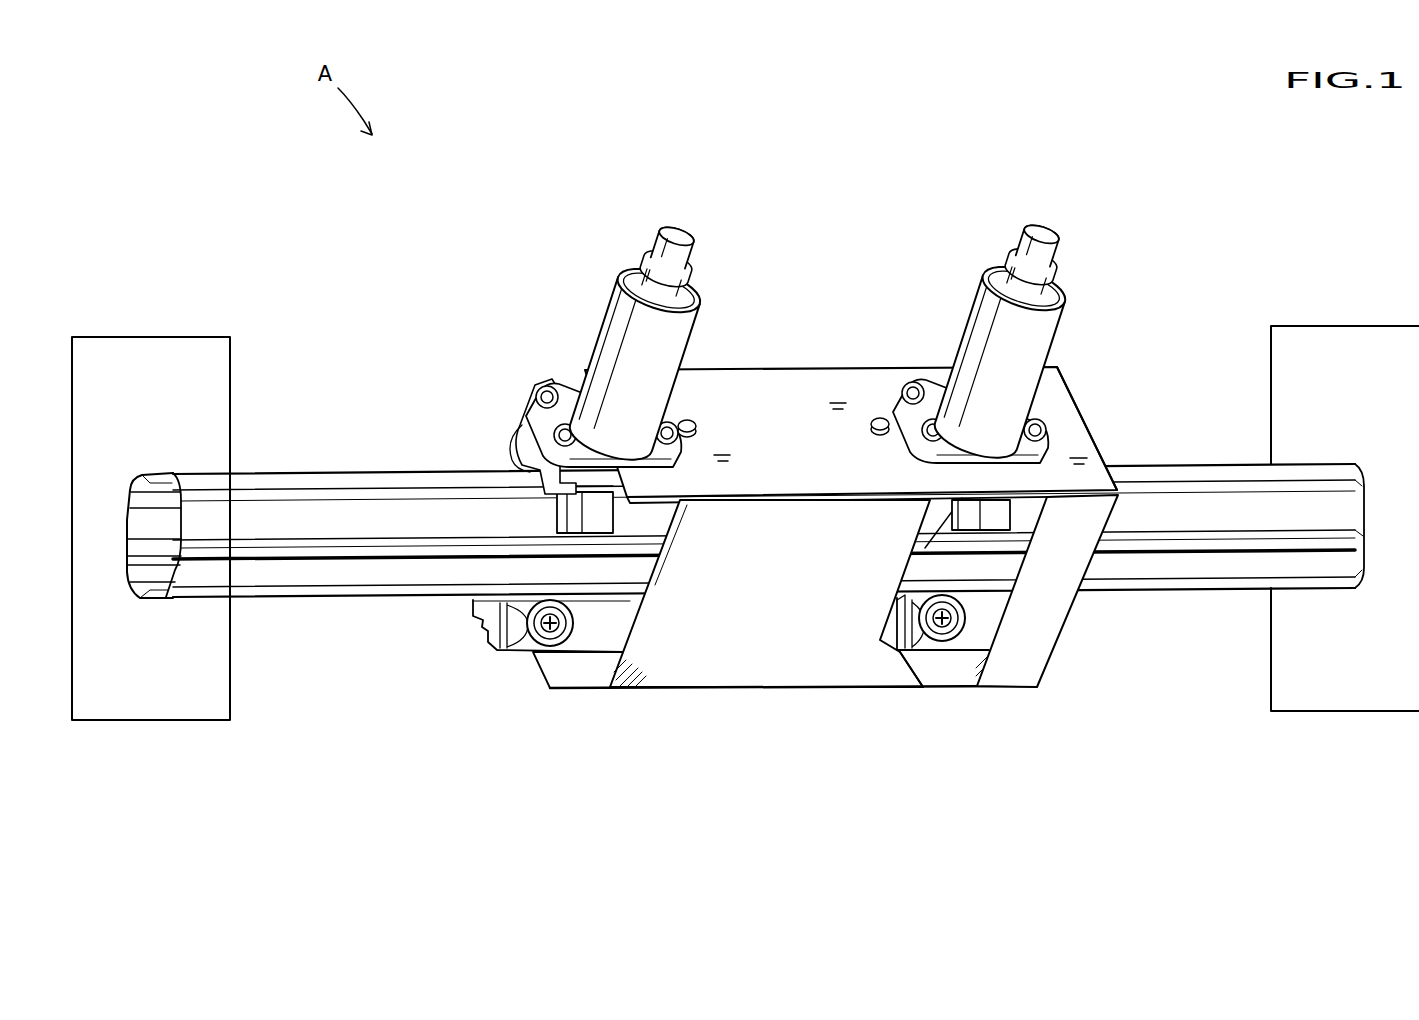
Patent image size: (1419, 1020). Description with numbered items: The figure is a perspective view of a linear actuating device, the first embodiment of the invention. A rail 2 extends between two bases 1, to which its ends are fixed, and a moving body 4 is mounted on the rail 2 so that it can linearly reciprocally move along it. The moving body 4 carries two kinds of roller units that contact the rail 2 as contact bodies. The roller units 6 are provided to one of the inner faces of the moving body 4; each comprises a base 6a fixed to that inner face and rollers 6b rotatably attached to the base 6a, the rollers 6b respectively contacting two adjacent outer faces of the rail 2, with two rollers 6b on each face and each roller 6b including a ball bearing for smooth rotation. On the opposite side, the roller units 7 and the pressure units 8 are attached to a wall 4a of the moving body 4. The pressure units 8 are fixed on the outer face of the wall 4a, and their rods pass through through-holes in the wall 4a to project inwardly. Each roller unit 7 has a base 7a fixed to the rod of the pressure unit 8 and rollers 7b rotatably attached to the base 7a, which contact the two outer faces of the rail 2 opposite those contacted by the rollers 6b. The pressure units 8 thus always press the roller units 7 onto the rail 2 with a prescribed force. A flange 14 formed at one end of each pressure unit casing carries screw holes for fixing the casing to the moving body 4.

The base 1 is at (157, 717).
The rail 2 is at (352, 508).
The moving body 4 is at (839, 561).
The wall 4a is at (1077, 395).
The roller unit 6 is at (731, 701).
The base 6a is at (592, 633).
The roller 6b is at (523, 640).
The roller unit 7 is at (788, 428).
The base 7a is at (547, 390).
The roller 7b is at (573, 515).
The pressure unit 8 is at (805, 301).
The flange 14 is at (667, 419).